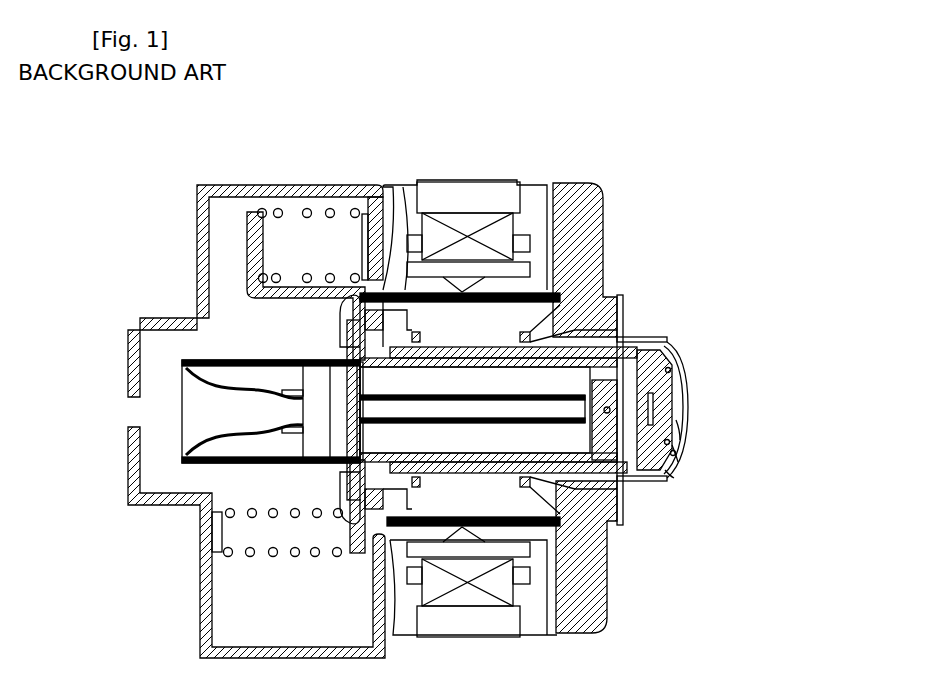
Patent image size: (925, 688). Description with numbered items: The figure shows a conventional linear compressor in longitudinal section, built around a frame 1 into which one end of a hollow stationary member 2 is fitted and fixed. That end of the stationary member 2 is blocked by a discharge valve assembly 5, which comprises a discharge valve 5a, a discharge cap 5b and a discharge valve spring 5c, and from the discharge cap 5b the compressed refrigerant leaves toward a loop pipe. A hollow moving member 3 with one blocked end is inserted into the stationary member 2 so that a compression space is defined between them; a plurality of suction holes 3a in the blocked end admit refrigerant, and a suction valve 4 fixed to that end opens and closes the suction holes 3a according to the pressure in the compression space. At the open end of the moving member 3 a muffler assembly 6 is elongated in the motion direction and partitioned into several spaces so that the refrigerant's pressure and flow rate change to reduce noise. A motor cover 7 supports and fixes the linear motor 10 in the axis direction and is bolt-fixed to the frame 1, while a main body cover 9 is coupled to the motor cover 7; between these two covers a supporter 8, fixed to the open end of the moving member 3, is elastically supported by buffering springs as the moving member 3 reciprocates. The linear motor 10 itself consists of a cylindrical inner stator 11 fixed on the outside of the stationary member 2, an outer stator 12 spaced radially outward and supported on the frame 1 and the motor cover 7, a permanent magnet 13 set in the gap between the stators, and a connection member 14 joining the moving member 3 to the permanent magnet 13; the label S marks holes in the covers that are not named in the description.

The frame 1 is at (583, 187).
The stationary member 2 is at (627, 336).
The moving member 3 is at (689, 402).
The suction holes 3a is at (670, 372).
The suction valve 4 is at (672, 398).
The discharge valve assembly 5 is at (724, 455).
The discharge valve 5a is at (676, 421).
The discharge cap 5b is at (678, 450).
The discharge valve spring 5c is at (710, 478).
The muffler assembly 6 is at (162, 419).
The motor cover 7 is at (360, 192).
The supporter 8 is at (283, 290).
The main body cover 9 is at (200, 238).
The hole S is at (330, 208).
The linear motor 10 is at (532, 118).
The inner stator 11 is at (457, 323).
The outer stator 12 is at (485, 203).
The permanent magnet 13 is at (536, 292).
The connection member 14 is at (400, 290).